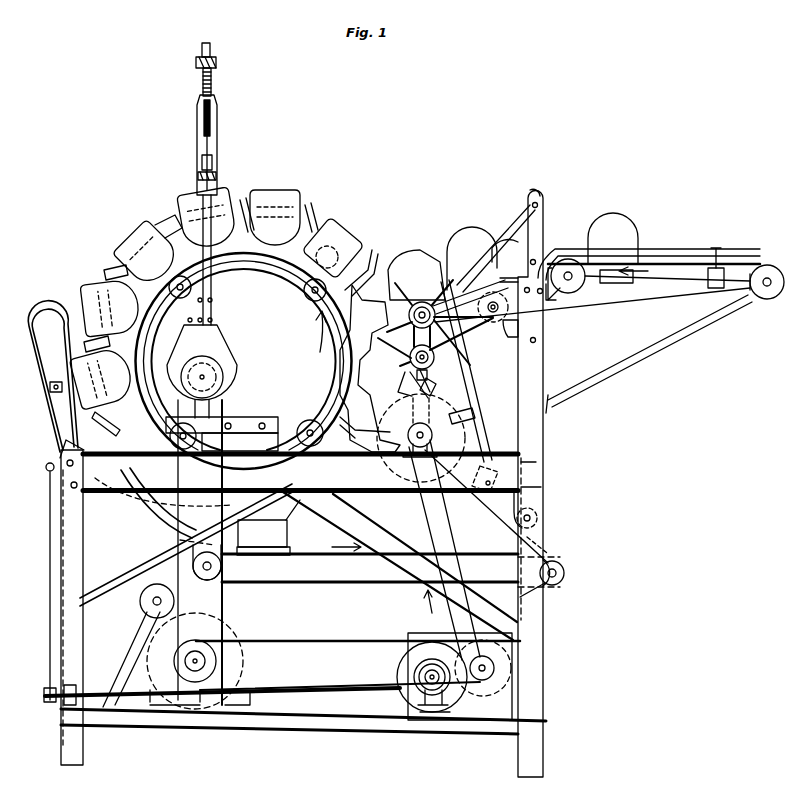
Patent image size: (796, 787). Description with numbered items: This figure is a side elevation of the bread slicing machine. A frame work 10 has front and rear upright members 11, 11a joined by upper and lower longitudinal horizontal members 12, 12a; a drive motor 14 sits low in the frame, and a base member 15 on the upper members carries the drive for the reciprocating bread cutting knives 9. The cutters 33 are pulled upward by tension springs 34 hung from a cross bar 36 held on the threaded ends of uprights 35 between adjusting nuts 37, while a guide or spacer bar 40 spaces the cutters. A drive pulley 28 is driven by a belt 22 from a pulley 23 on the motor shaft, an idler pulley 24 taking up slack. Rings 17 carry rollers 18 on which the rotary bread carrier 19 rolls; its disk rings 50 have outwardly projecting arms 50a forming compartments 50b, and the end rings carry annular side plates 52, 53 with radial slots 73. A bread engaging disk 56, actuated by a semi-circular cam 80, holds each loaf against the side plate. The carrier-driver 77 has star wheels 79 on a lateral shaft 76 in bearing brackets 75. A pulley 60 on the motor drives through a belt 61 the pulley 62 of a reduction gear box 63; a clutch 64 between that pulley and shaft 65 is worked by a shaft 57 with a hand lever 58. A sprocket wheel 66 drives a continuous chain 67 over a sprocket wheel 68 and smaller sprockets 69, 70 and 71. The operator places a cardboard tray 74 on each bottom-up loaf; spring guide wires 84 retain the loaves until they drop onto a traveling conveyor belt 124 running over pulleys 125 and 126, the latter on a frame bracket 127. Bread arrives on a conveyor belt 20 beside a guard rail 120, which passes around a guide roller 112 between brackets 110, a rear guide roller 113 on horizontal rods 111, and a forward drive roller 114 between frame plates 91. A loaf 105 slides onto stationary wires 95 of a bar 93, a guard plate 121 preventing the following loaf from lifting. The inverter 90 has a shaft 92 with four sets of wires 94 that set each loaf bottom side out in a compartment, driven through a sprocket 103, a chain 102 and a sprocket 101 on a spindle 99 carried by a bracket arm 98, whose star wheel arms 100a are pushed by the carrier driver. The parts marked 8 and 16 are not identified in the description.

The bracket 8 is at (268, 160).
The reciprocating bread cutting knives 9 is at (242, 345).
The frame work 10 is at (398, 148).
The front upright members 11 is at (72, 602).
The rear upright members 11a is at (534, 531).
The upper longitudinal horizontal members 12 is at (299, 547).
The lower longitudinal horizontal members 12a is at (318, 722).
The drive motor 14 is at (236, 640).
The base member 15 is at (258, 420).
The hub bracket 16 is at (202, 368).
The rings 17 is at (338, 328).
The rollers 18 is at (181, 298).
The rotary bread carrier 19 is at (340, 224).
The conveyor belt 20 is at (700, 252).
The belt 22 is at (224, 600).
The pulley 23 is at (218, 660).
The idler pulley 24 is at (148, 606).
The drive pulley 28 is at (226, 376).
The cutters 33 is at (202, 162).
The tension springs 34 is at (212, 118).
The uprights 35 is at (196, 112).
The cross bar 36 is at (218, 60).
The adjusting nuts 37 is at (195, 68).
The guide or spacer bar 40 is at (198, 177).
The disk rings 50 is at (246, 242).
The outwardly projecting arms 50a is at (110, 270).
The compartments 50b is at (112, 278).
The annular side plate 52 is at (370, 368).
The annular side plate 53 is at (140, 243).
The bread engaging disk 56 is at (284, 200).
The shaft 57 is at (130, 712).
The hand lever 58 is at (48, 628).
The pulley 60 is at (212, 670).
The belt 61 is at (330, 642).
The pulley 62 is at (400, 664).
The reduction gear box 63 is at (404, 638).
The clutch 64 is at (425, 705).
The shaft 65 is at (418, 676).
The sprocket wheel 66 is at (482, 655).
The continuous chain 67 is at (412, 538).
The gear or sprocket wheel 68 is at (462, 470).
The sprocket 69 is at (512, 335).
The sprocket 70 is at (518, 524).
The sprocket 71 is at (556, 586).
The radial slots 73 is at (378, 272).
The cardboard tray 74 is at (134, 228).
The bearing brackets 75 is at (414, 455).
The lateral shaft 76 is at (426, 455).
The carrier-driver 77 is at (440, 414).
The star wheels 79 is at (474, 418).
The semi-circular cam 80 is at (262, 200).
The spring guide wires 84 is at (140, 517).
The feeding mechanism 90 is at (422, 300).
The frame plates 91 is at (541, 196).
The shaft 92 is at (426, 302).
The stationary bar 93 is at (461, 341).
The pins or wires 94 is at (418, 303).
The pins or wires 95 is at (452, 292).
The bracket arm 98 is at (478, 438).
The rotatable spindle 99 is at (410, 372).
The radial arms 100a is at (438, 382).
The sprocket 101 is at (435, 368).
The chain 102 is at (414, 318).
The sprocket 103 is at (477, 307).
The loaf 105 is at (352, 242).
The brackets 110 is at (569, 294).
The horizontal rods 111 is at (640, 285).
The guide roller 112 is at (612, 286).
The rear guide roller 113 is at (764, 302).
The forward drive roller 114 is at (494, 322).
The guard rail 120 is at (652, 257).
The guard plate 121 is at (486, 232).
The traveling conveyor belt 124 is at (300, 554).
The pulley 125 is at (566, 572).
The pulley 126 is at (204, 578).
The frame bracket 127 is at (177, 540).